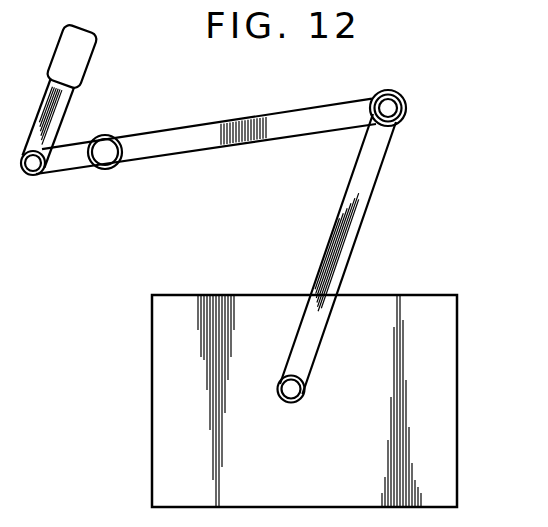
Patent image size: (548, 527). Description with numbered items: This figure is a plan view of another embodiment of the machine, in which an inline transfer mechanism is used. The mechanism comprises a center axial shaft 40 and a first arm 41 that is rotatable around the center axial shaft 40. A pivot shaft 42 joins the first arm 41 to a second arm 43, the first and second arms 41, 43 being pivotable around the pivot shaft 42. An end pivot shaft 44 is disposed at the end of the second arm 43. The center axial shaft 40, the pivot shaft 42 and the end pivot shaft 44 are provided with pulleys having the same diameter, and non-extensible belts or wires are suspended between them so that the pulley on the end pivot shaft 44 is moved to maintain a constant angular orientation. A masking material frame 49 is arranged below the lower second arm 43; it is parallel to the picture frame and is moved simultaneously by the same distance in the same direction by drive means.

The center axial shaft 40 is at (106, 135).
The first arm 41 is at (212, 122).
The pivot shaft 42 is at (391, 91).
The second arm 43 is at (367, 206).
The end pivot shaft 44 is at (305, 390).
The masking material frame 49 is at (457, 391).